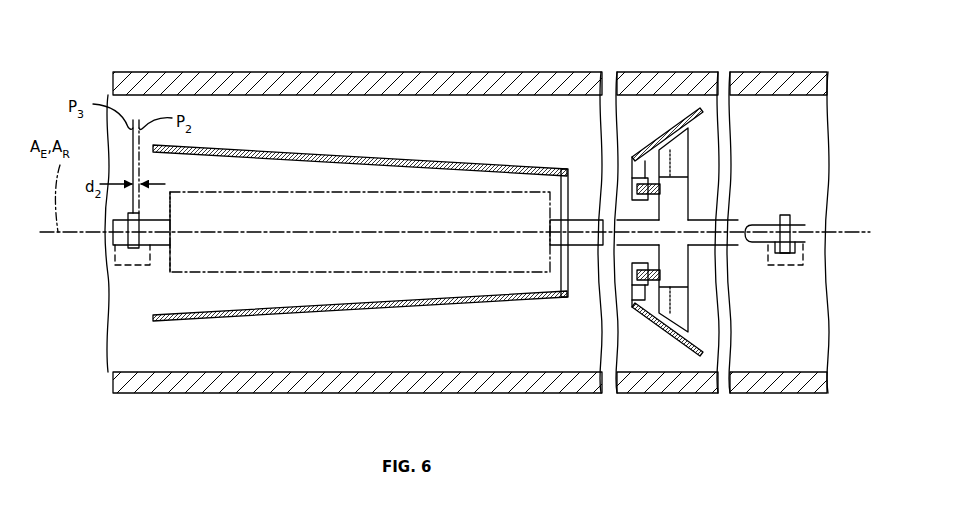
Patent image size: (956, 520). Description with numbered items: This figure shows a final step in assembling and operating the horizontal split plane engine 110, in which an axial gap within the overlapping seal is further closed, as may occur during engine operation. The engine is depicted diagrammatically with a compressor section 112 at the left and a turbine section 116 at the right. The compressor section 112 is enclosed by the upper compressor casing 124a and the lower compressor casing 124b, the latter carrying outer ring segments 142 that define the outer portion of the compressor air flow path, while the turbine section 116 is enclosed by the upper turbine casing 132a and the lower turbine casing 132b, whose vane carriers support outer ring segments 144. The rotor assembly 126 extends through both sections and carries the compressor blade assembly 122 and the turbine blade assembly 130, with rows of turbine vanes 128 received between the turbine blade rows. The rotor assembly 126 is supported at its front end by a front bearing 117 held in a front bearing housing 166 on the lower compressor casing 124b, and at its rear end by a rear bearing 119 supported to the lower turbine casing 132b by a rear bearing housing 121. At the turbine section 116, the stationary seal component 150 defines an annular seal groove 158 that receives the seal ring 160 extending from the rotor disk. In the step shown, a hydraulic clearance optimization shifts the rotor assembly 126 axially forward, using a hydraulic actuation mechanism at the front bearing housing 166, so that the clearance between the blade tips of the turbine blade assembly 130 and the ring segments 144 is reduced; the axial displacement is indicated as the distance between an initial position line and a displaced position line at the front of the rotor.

The horizontal split plane engine 110 is at (155, 60).
The compressor section 112 is at (188, 418).
The turbine section 116 is at (676, 400).
The front bearing 117 is at (132, 248).
The rear bearing 119 is at (785, 214).
The rear bearing housing 121 is at (782, 268).
The compressor blade assembly 122 is at (374, 176).
The upper compressor casing 124a is at (306, 66).
The lower compressor casing 124b is at (320, 396).
The rotor assembly 126 is at (582, 249).
The turbine vanes 128 is at (641, 302).
The turbine blade assembly 130 is at (694, 154).
The upper turbine casing 132a is at (690, 66).
The lower turbine casing 132b is at (697, 396).
The outer ring segments 142 is at (462, 302).
The outer ring segments 144 is at (655, 130).
The stationary seal component 150 is at (627, 185).
The annular seal groove 158 is at (650, 273).
The seal ring 160 is at (652, 286).
The front bearing housing 166 is at (137, 268).